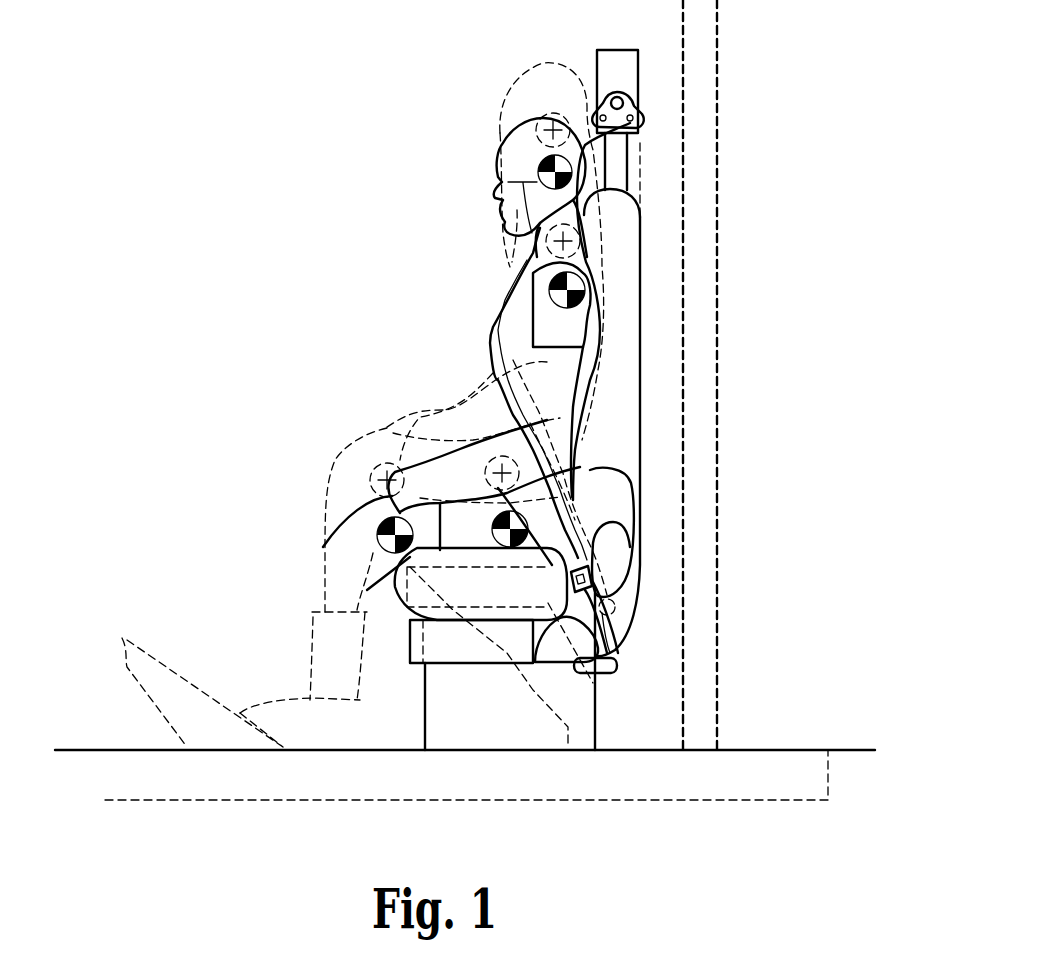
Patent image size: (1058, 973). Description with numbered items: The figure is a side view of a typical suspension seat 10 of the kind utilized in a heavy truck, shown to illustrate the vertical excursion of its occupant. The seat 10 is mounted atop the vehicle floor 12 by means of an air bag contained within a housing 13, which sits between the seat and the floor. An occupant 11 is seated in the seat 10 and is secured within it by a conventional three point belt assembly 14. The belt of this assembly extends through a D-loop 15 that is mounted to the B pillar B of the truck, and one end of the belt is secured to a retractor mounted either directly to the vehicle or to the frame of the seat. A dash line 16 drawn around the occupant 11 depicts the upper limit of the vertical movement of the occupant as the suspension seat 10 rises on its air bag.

The suspension seat 10 is at (630, 227).
The occupant 11 is at (510, 297).
The vehicle floor 12 is at (133, 748).
The housing 13 is at (453, 723).
The three point belt assembly 14 is at (493, 367).
The D-loop 15 is at (633, 102).
The dash line 16 is at (527, 70).
The B pillar B is at (610, 77).